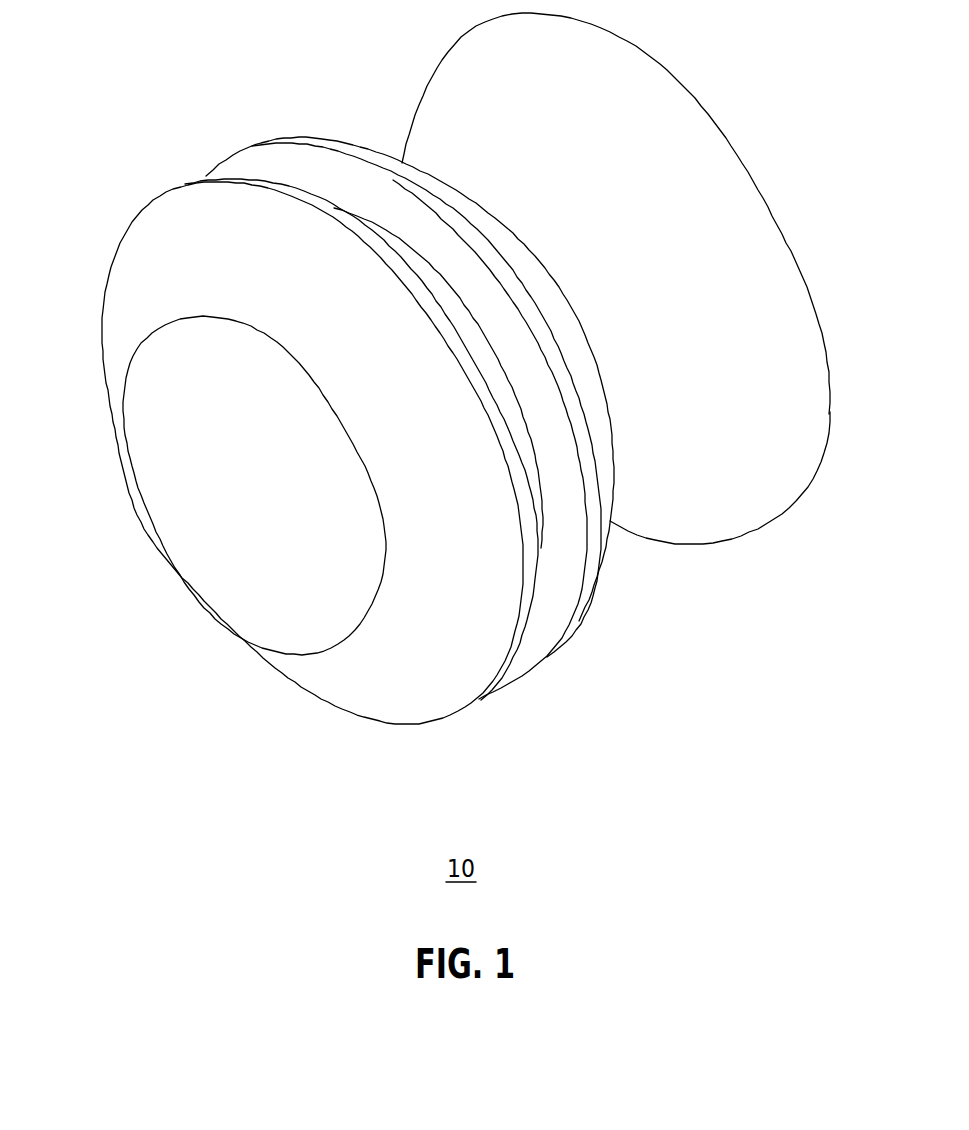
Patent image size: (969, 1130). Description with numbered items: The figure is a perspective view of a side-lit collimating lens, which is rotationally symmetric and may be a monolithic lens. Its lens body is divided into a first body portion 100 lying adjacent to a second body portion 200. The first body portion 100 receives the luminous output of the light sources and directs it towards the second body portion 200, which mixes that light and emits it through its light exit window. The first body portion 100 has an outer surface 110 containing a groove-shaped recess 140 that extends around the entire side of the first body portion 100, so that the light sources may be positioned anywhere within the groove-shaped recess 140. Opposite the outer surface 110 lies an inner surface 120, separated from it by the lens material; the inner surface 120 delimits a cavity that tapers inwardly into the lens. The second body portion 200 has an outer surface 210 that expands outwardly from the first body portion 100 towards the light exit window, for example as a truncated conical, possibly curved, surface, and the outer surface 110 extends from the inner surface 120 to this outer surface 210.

The first body portion 100 is at (347, 431).
The outer surface 110 is at (577, 622).
The inner surface 120 is at (237, 540).
The groove-shaped recess 140 is at (380, 238).
The second body portion 200 is at (622, 338).
The outer surface 210 is at (722, 470).